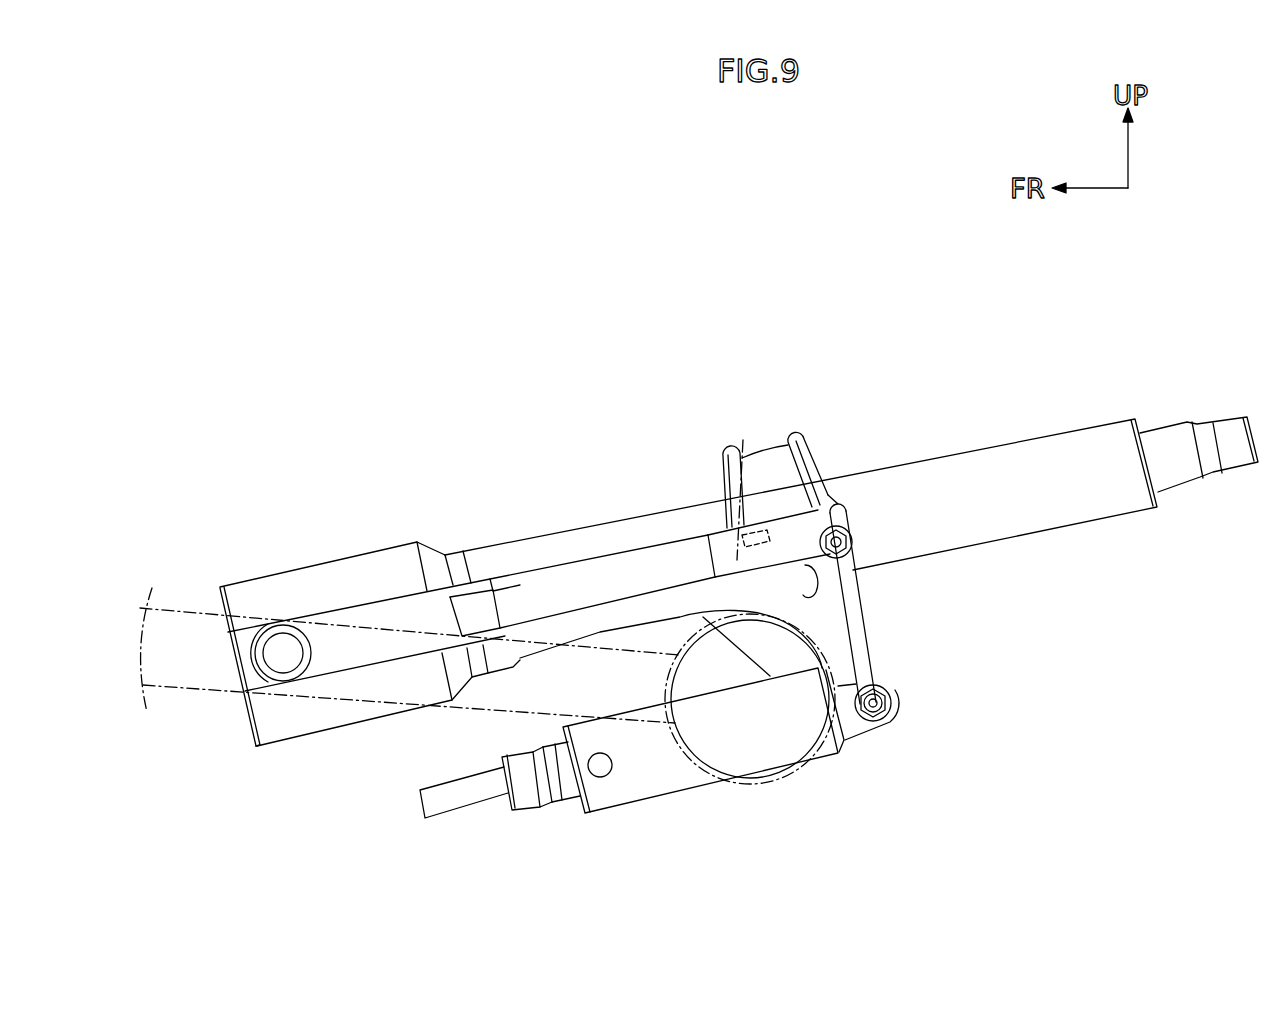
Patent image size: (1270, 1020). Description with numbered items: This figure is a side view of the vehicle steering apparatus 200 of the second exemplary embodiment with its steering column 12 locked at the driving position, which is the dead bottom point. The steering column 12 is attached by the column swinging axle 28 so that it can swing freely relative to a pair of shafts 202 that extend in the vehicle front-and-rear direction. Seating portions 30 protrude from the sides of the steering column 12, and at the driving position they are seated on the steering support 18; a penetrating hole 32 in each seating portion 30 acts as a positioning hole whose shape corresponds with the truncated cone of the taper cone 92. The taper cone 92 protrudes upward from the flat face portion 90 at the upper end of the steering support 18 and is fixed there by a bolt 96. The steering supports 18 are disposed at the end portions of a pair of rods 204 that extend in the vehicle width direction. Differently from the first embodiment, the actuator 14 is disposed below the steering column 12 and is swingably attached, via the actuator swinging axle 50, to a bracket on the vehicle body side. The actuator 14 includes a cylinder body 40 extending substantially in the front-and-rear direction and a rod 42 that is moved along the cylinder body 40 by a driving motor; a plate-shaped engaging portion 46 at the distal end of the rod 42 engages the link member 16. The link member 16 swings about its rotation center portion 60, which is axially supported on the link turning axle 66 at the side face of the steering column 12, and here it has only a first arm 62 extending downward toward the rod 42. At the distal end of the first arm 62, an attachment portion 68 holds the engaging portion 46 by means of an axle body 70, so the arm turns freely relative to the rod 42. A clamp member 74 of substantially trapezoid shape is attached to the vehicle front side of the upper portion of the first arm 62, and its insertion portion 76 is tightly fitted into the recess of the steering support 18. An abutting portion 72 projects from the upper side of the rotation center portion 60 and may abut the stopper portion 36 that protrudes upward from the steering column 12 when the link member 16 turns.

The vehicle steering apparatus 200 is at (669, 312).
The shafts 202 is at (190, 608).
The rods 204 is at (812, 755).
The steering column 12 is at (1066, 430).
The actuator 14 is at (668, 783).
The link member 16 is at (897, 604).
The steering support 18 is at (718, 596).
The column swinging axle 28 is at (273, 627).
The seating portion 30 is at (712, 552).
The penetrating hole 32 is at (760, 528).
The stopper portion 36 is at (826, 486).
The cylinder body 40 is at (722, 787).
The rod 42 is at (845, 736).
The engaging portion 46 is at (874, 723).
The actuator swinging axle 50 is at (601, 778).
The rotation center portion 60 is at (856, 540).
The first arm 62 is at (876, 664).
The link turning axle 66 is at (850, 520).
The attachment portion 68 is at (891, 690).
The axle body 70 is at (892, 709).
The abutting portion 72 is at (840, 492).
The clamp member 74 is at (860, 574).
The insertion portion 76 is at (800, 618).
The flat face portion 90 is at (735, 565).
The taper cone 92 is at (741, 548).
The bolt 96 is at (757, 527).